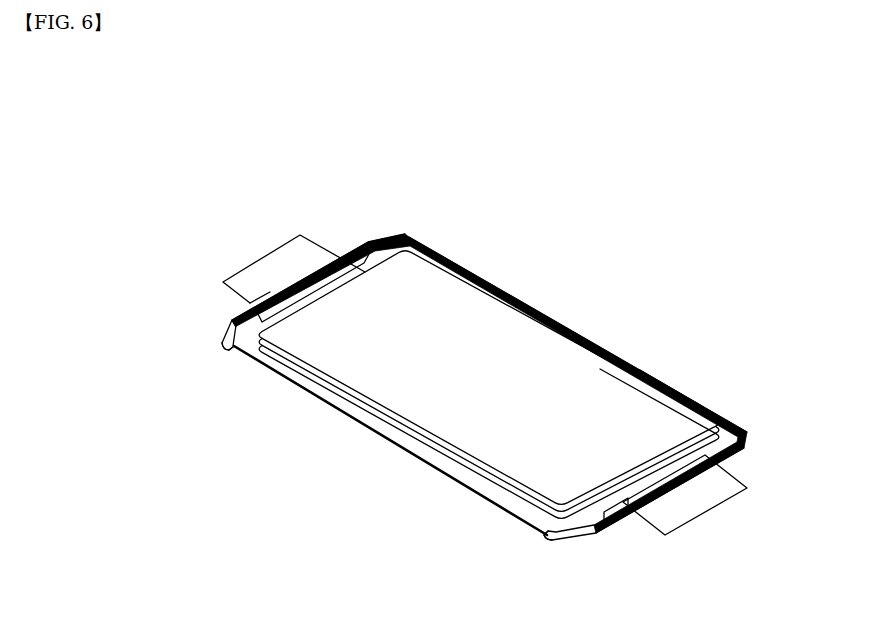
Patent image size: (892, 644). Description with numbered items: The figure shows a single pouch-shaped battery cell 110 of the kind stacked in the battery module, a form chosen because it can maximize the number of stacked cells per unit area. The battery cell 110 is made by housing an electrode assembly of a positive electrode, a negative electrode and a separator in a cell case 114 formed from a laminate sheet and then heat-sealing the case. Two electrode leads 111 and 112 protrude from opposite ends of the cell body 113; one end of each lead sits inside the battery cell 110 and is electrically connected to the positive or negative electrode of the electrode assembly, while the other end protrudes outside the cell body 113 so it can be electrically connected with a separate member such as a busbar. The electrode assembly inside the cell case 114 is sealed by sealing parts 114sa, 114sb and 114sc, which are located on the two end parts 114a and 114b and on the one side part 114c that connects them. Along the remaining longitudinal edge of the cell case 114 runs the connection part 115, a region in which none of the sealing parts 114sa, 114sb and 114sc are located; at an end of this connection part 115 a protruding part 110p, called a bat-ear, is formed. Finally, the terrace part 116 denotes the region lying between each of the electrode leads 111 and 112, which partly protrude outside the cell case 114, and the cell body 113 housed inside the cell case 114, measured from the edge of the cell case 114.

The battery cell 110 is at (452, 110).
The electrode lead 111 is at (274, 264).
The electrode lead 112 is at (713, 515).
The cell body 113 is at (492, 320).
The cell case 114 is at (733, 428).
The end part 114a is at (363, 240).
The end part 114b is at (608, 530).
The side part 114c is at (583, 335).
The sealing part 114sa is at (345, 252).
The sealing part 114sb is at (735, 455).
The sealing part 114sc is at (668, 388).
The connection part 115 is at (415, 447).
The terrace part 116 is at (243, 328).
The protruding part 110p is at (223, 350).